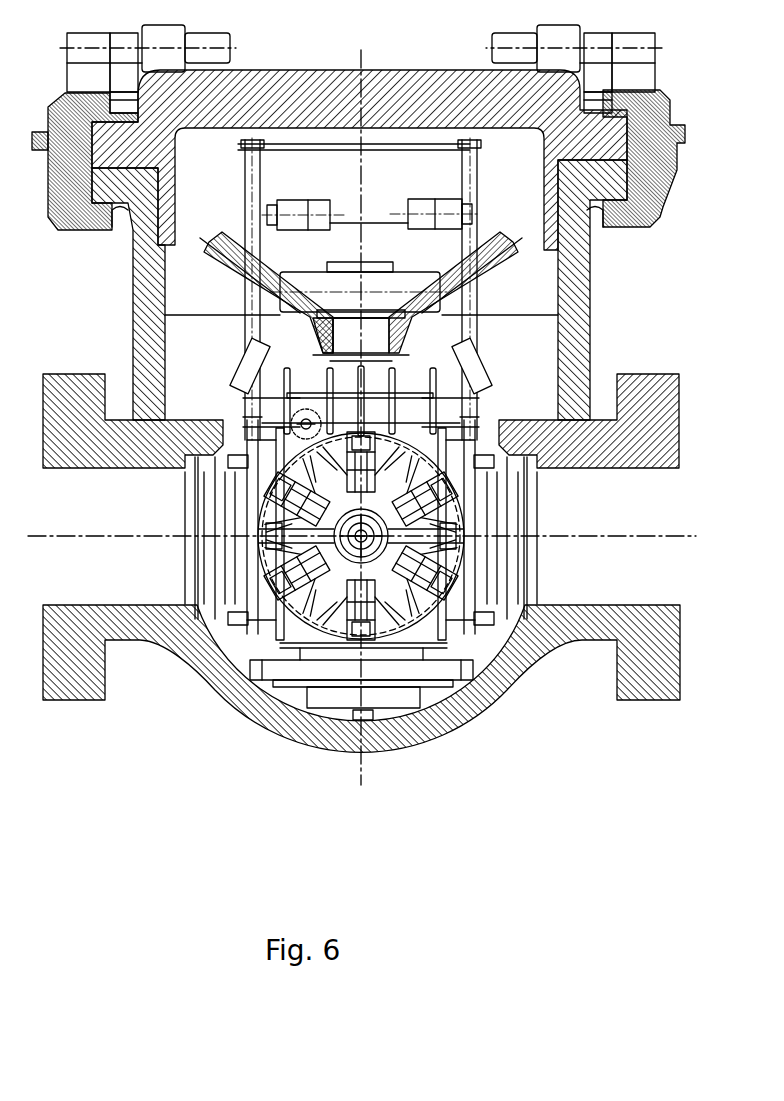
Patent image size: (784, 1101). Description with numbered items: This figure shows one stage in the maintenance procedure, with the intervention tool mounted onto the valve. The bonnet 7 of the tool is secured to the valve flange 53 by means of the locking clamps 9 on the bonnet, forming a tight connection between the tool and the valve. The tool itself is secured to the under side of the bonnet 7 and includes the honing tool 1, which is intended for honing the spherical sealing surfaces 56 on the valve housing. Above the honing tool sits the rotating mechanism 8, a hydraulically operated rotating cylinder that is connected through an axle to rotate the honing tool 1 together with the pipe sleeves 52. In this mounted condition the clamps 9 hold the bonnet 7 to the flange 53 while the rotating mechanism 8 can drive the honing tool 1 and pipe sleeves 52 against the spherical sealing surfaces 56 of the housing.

The honing tool 1 is at (452, 596).
The bonnet 7 is at (412, 74).
The rotating mechanism 8 is at (298, 283).
The external clamps 9 is at (636, 206).
The pipe sleeves 52 is at (257, 609).
The valve flange 53 is at (568, 273).
The spherical sealing surfaces 56 is at (534, 660).